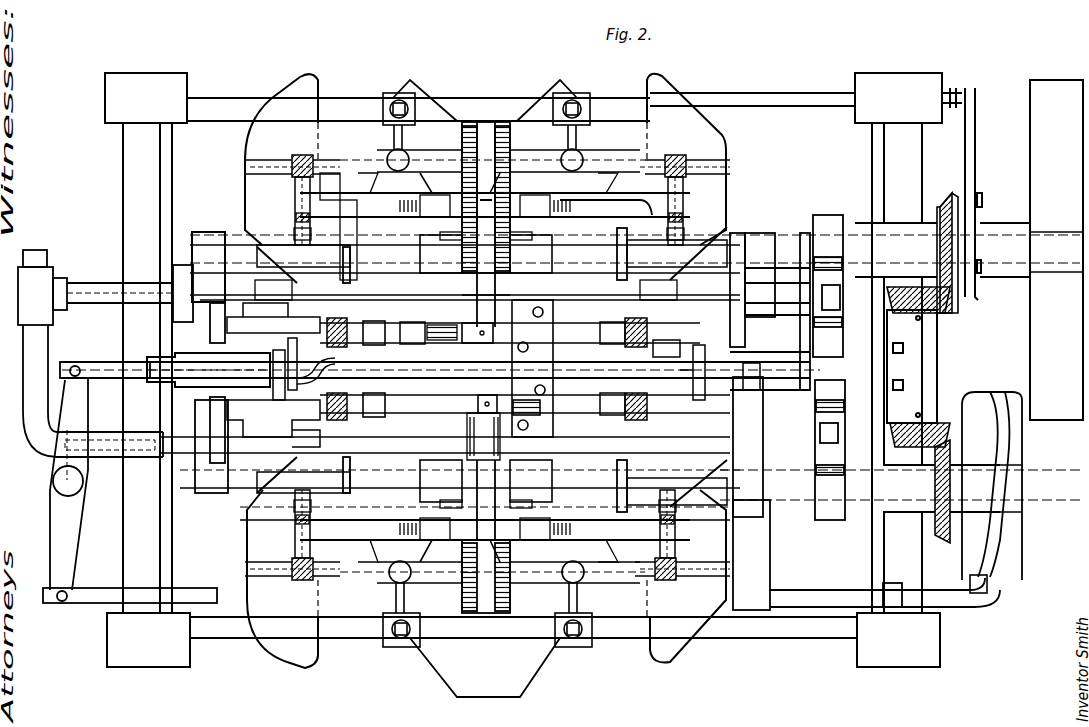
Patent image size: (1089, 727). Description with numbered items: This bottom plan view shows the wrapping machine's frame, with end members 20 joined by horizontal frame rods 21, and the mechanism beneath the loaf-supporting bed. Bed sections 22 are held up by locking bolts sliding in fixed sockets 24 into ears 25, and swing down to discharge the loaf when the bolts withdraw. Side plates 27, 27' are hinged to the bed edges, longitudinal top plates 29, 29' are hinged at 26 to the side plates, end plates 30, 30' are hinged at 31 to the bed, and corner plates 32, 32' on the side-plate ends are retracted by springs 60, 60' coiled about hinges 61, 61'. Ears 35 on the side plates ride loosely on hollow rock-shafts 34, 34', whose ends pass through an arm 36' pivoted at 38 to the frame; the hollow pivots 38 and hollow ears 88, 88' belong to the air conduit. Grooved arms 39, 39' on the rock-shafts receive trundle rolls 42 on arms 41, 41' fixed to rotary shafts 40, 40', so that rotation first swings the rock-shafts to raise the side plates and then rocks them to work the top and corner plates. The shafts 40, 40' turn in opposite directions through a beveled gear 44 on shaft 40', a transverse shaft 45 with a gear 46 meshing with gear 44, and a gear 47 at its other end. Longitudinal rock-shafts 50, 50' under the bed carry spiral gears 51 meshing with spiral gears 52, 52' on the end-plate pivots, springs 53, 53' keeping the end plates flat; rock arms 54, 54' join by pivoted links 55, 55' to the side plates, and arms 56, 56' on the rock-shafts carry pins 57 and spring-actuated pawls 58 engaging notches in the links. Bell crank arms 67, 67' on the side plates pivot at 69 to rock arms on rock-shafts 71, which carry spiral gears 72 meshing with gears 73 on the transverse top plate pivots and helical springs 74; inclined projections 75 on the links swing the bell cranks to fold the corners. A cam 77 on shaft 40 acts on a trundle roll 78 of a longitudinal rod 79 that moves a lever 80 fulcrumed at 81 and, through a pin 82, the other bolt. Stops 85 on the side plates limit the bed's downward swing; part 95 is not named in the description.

The end members 20 is at (123, 241).
The horizontal frame rods 21 is at (190, 356).
The bed section 22 is at (441, 379).
The fixed sockets 24 is at (514, 362).
The ears 25 is at (273, 385).
The hinges 26 is at (492, 370).
The side plate 27 is at (473, 475).
The side plate 27' is at (462, 262).
The longitudinal top plate 29 is at (485, 578).
The longitudinal top plate 29' is at (485, 203).
The end plate 30 is at (445, 447).
The end plate 30' is at (470, 293).
The hinges 31 is at (306, 318).
The corner plate 32 is at (483, 371).
The corner plate 32' is at (700, 290).
The rock-shaft 34 is at (460, 487).
The rock-shaft 34' is at (490, 280).
The ears 35 is at (617, 250).
The arm 36' is at (211, 259).
The pivots 38 is at (95, 288).
The grooved arm 39 is at (833, 459).
The grooved arm 39' is at (831, 277).
The rotary shaft 40 is at (1024, 488).
The rotary shaft 40' is at (1056, 263).
The arm 41 is at (900, 488).
The arm 41' is at (635, 250).
The trundle rolls 42 is at (950, 470).
The beveled gear 44 is at (955, 247).
The transverse shaft 45 is at (1030, 141).
The gear 46 is at (945, 312).
The gear 47 is at (950, 430).
The rock-shaft 50 is at (525, 411).
The rock-shaft 50' is at (414, 340).
The spiral gears 51 is at (510, 340).
The spiral gears 52 is at (455, 382).
The clutch member 52' is at (319, 332).
The springs 53 is at (494, 368).
The spring 53' is at (431, 322).
The rock arm 54 is at (489, 395).
The rock arm 54' is at (482, 341).
The link 55 is at (498, 436).
The link 55' is at (497, 288).
The arm 56 is at (760, 447).
The arm 56' is at (770, 311).
The pins 57 is at (601, 375).
The pawl 58 is at (215, 510).
The springs 60 is at (492, 372).
The bracket 60' is at (303, 253).
The hinges 61 is at (467, 516).
The pin 61' is at (486, 230).
The bell crank arm 67 is at (482, 519).
The bell crank arm 67' is at (496, 213).
The pivot 69 is at (338, 226).
The rock-shaft 71 is at (295, 201).
The spiral gear 72 is at (313, 160).
The spiral gear 73 is at (302, 155).
The helical springs 74 is at (296, 216).
The inclined projections 75 is at (432, 188).
The cam 77 is at (1022, 530).
The trundle roll 78 is at (987, 590).
The rod 79 is at (90, 603).
The lever 80 is at (60, 425).
The fulcrum 81 is at (55, 490).
The pin 82 is at (705, 372).
The stops 85 is at (770, 545).
The hollow ear 88 is at (465, 368).
The hollow ear 88' is at (540, 254).
The bar 95 is at (105, 362).